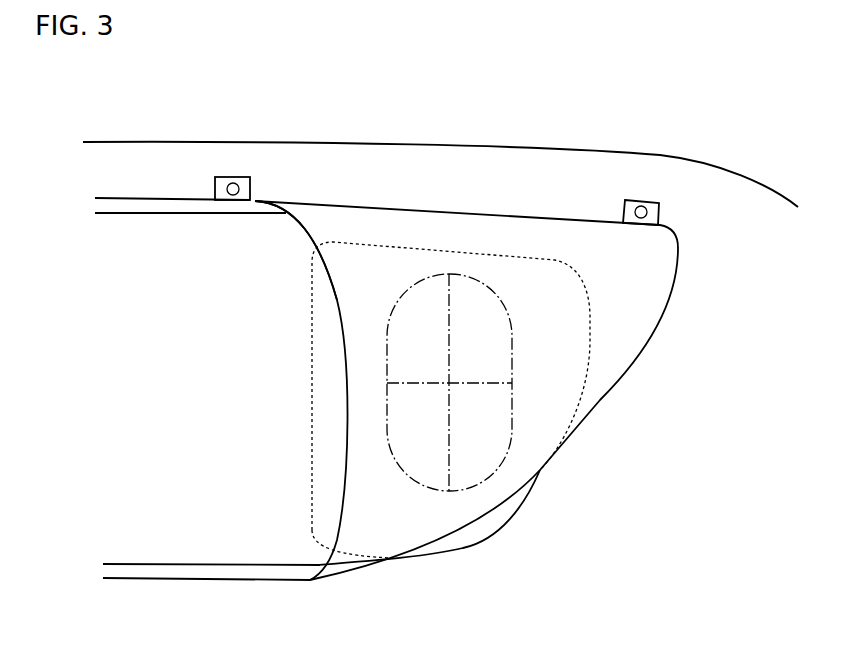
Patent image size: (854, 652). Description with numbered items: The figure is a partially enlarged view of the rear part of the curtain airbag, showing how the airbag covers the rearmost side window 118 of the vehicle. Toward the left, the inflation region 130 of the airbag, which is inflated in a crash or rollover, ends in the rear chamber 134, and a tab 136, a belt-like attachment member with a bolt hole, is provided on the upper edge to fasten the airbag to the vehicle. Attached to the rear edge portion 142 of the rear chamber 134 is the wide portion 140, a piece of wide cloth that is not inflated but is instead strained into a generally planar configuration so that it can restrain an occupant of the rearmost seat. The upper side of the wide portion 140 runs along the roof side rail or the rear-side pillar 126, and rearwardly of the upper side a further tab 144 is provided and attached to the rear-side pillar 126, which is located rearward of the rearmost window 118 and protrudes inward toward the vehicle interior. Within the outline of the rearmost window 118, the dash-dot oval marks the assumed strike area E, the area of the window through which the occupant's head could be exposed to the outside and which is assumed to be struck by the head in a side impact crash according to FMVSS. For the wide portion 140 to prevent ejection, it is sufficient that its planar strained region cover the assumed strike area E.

The rearmost side window 118 is at (468, 540).
The rear-side pillar 126 is at (752, 176).
The inflation region 130 is at (112, 231).
The rear chamber 134 is at (170, 231).
The tab 136 is at (240, 177).
The wide portion 140 is at (483, 222).
The rear edge portion 142 is at (312, 235).
The tab 144 is at (645, 200).
The assumed strike area E is at (512, 335).